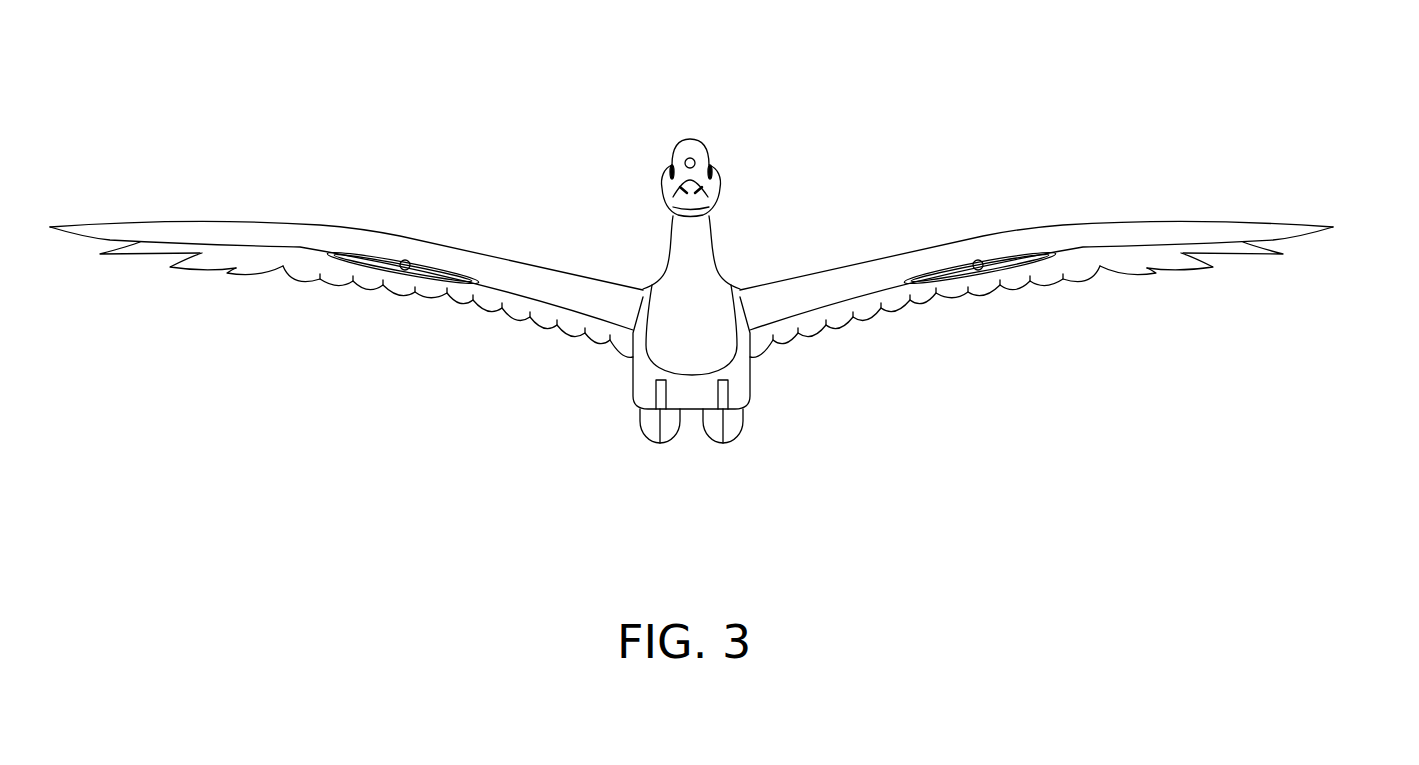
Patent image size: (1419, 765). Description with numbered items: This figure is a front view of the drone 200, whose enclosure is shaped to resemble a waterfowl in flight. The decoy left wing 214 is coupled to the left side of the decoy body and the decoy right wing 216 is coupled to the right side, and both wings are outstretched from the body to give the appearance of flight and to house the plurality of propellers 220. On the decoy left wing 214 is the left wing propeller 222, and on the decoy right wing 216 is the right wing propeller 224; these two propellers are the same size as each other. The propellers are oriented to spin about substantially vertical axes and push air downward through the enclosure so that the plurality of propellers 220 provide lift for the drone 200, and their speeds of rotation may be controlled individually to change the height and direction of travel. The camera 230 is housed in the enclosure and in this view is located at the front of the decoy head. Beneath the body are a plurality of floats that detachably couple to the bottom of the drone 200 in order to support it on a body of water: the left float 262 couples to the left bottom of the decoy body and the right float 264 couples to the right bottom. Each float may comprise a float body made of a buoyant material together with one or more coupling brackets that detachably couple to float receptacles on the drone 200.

The drone 200 is at (734, 294).
The decoy left wing 214 is at (1030, 230).
The decoy right wing 216 is at (322, 228).
The plurality of propellers 220 is at (672, 329).
The left wing propeller 222 is at (980, 268).
The right wing propeller 224 is at (403, 268).
The camera 230 is at (690, 162).
The left float 262 is at (717, 428).
The right float 264 is at (650, 428).